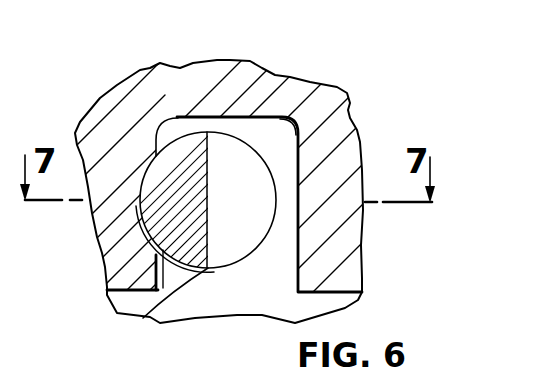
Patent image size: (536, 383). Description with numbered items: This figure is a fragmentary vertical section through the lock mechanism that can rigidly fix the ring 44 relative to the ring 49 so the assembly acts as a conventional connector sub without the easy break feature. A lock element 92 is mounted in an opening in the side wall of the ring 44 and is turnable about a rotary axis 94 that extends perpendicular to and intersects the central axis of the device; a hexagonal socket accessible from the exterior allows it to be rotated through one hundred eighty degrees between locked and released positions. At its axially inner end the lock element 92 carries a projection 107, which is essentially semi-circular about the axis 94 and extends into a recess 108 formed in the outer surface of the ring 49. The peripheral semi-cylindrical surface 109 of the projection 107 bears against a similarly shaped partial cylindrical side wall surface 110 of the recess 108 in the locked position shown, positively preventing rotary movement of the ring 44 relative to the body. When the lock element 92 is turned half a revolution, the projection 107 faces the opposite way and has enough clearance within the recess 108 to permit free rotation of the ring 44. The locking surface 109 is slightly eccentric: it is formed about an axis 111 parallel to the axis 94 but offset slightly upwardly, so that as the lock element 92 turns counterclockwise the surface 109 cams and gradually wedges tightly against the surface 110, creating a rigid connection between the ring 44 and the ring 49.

The ring 44 is at (348, 307).
The ring 49 is at (356, 233).
The lock element 92 is at (218, 281).
The rotary axis 94 is at (211, 206).
The projection 107 is at (184, 118).
The recess 108 is at (341, 118).
The semi-cylindrical surface 109 is at (140, 222).
The partial cylindrical side wall surface 110 is at (149, 318).
The axis 111 is at (212, 191).